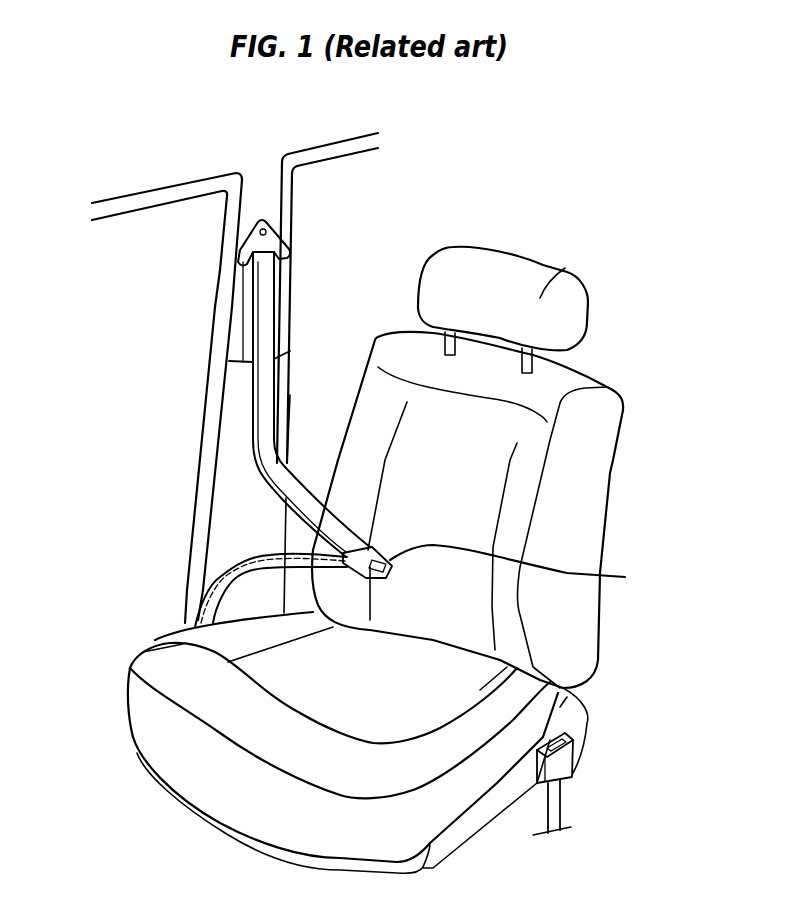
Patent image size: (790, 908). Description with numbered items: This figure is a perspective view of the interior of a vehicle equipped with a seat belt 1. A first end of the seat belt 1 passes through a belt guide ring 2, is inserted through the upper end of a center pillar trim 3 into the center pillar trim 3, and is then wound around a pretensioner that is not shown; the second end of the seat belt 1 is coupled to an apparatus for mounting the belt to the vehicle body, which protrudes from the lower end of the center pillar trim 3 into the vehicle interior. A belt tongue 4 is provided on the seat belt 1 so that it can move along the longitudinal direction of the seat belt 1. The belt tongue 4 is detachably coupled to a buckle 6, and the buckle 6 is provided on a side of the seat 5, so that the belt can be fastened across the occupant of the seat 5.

The seat belt 1 is at (253, 413).
The belt guide ring 2 is at (255, 243).
The center pillar trim 3 is at (232, 490).
The belt tongue 4 is at (625, 577).
The seat 5 is at (612, 455).
The buckle 6 is at (567, 768).